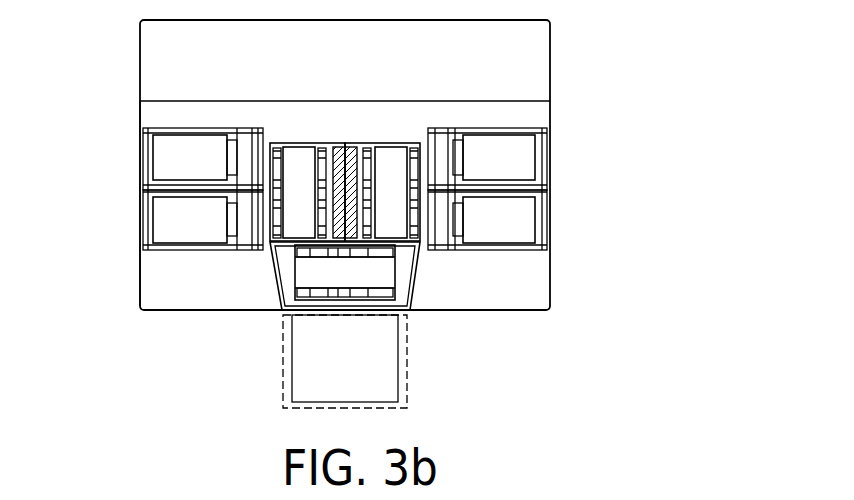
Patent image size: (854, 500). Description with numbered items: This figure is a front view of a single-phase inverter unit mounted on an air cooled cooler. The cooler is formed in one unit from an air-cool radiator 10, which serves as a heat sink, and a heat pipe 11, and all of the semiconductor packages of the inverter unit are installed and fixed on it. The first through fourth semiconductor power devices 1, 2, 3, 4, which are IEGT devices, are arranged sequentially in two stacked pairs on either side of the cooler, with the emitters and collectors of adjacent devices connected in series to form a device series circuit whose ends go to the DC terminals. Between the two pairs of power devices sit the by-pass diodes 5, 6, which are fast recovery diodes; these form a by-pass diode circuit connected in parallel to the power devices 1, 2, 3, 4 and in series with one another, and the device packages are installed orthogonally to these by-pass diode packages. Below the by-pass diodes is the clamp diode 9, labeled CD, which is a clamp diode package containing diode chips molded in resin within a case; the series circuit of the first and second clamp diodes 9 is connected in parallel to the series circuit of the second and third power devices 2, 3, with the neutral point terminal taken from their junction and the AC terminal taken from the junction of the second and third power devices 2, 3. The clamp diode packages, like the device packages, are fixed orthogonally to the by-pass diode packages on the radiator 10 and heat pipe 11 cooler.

The first semiconductor power device 1 is at (191, 235).
The second semiconductor power device 2 is at (193, 140).
The third semiconductor power device 3 is at (500, 140).
The fourth semiconductor power device 4 is at (500, 237).
The by-pass diode 5 is at (301, 147).
The by-pass diode 6 is at (393, 147).
The clamp diode 9 is at (295, 267).
The air-cool radiator 10 is at (550, 61).
The heat pipe 11 is at (140, 289).